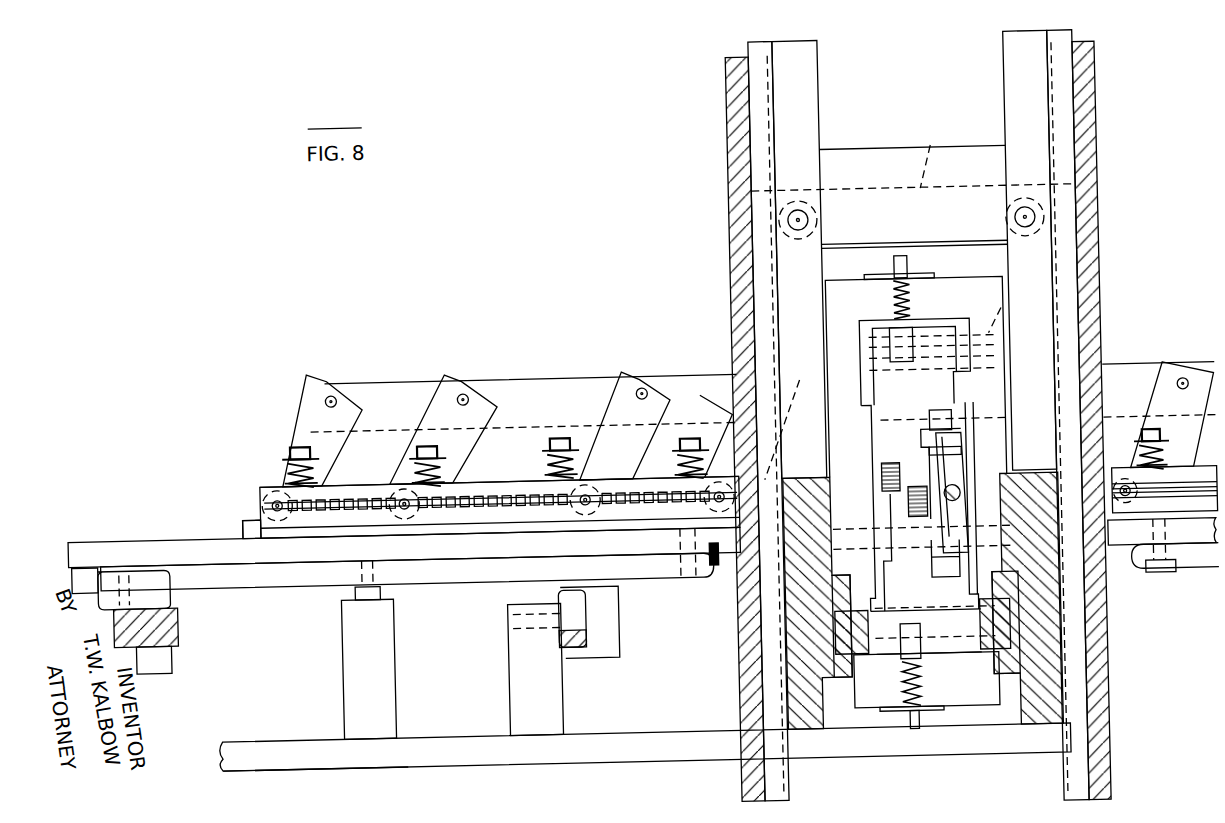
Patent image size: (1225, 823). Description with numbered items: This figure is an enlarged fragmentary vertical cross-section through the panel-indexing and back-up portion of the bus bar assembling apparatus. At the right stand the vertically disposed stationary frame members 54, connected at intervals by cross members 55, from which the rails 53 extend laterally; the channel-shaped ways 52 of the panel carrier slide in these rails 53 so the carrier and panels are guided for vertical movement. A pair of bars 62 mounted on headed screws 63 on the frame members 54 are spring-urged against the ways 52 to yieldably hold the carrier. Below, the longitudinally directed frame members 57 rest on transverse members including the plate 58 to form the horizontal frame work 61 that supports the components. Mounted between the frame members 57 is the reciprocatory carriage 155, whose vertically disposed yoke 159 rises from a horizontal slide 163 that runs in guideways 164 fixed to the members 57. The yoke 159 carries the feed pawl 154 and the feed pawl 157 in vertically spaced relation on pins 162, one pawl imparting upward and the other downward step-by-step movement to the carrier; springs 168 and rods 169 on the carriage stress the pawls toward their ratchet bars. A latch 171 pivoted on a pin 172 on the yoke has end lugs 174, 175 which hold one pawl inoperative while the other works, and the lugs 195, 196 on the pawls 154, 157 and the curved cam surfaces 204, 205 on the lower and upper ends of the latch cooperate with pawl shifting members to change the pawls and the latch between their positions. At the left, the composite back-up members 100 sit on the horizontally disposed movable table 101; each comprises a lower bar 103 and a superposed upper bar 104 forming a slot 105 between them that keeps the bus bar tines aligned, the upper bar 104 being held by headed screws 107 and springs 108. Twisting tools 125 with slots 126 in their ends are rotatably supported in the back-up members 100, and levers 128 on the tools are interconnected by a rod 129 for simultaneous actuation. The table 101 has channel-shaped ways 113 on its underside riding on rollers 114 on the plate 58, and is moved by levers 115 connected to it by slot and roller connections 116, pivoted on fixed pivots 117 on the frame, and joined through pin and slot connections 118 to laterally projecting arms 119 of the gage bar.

The channel-shaped ways 52 is at (746, 88).
The rails 53 is at (763, 58).
The vertical frame members 54 is at (802, 84).
The cross members 55 is at (882, 160).
The bars 62 is at (912, 149).
The headed screws 63 is at (792, 218).
The longitudinally directed frame members 57 is at (805, 665).
The plate 58 is at (503, 760).
The frame work 61 is at (283, 768).
The composite back-up members 100 is at (258, 473).
The movable table 101 is at (113, 540).
The bar 103 is at (257, 515).
The bar 104 is at (265, 475).
The slot 105 is at (482, 492).
The headed screws 107 is at (288, 436).
The springs 108 is at (289, 456).
The channel-shaped ways 113 is at (602, 626).
The rollers 114 is at (560, 642).
The levers 115 is at (254, 577).
The slot and roller connections 116 is at (688, 582).
The fixed pivots 117 is at (356, 588).
The pin and slot connections 118 is at (160, 589).
The laterally projecting arms 119 is at (164, 625).
The twisting tools 125 is at (278, 502).
The slots 126 is at (403, 503).
The levers 128 is at (437, 402).
The rod 129 is at (544, 390).
The feed pawl 154 is at (879, 479).
The reciprocatory carriage 155 is at (810, 320).
The feed pawl 157 is at (798, 382).
The yoke 159 is at (827, 290).
The pins 162 is at (838, 342).
The slide 163 is at (854, 670).
The guideways 164 is at (835, 665).
The springs 168 is at (915, 292).
The rods 169 is at (910, 265).
The latch 171 is at (965, 438).
The pin 172 is at (967, 474).
The lug 174 is at (957, 497).
The lug 175 is at (924, 446).
The lug 195 is at (930, 572).
The lug 196 is at (943, 404).
The cam surface 204 is at (950, 548).
The cam surface 205 is at (970, 425).